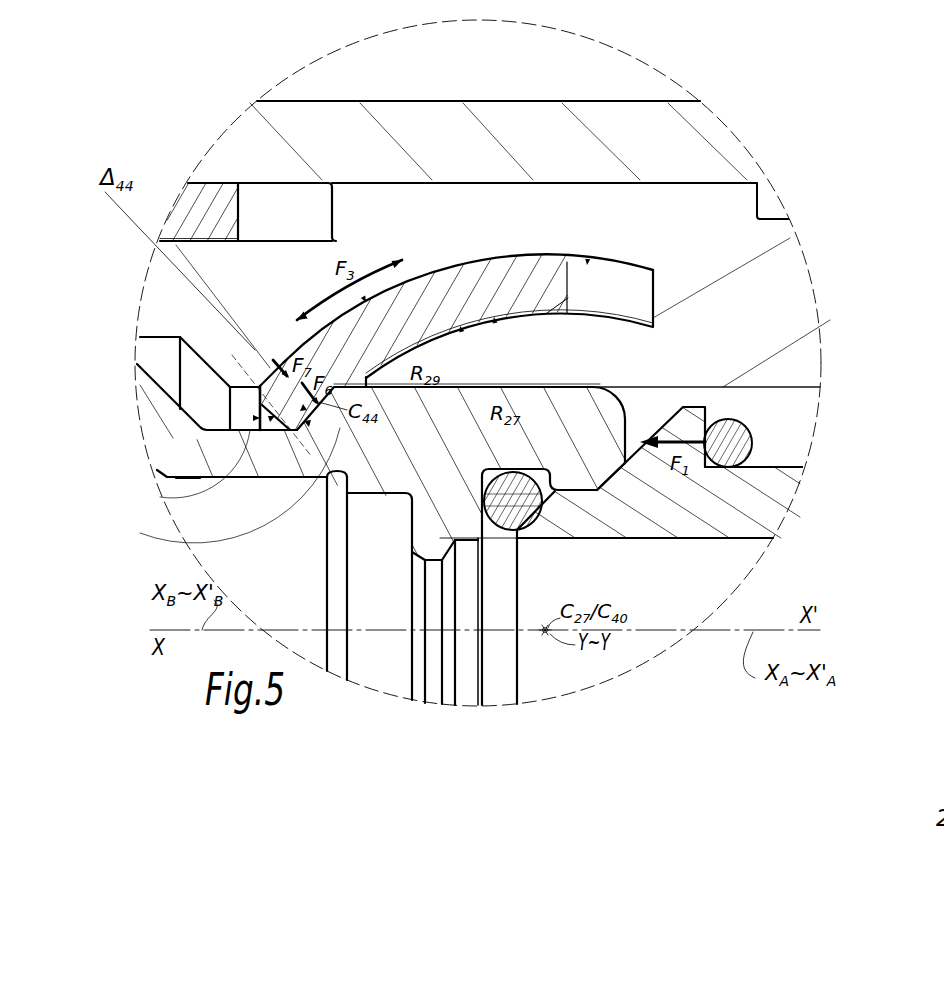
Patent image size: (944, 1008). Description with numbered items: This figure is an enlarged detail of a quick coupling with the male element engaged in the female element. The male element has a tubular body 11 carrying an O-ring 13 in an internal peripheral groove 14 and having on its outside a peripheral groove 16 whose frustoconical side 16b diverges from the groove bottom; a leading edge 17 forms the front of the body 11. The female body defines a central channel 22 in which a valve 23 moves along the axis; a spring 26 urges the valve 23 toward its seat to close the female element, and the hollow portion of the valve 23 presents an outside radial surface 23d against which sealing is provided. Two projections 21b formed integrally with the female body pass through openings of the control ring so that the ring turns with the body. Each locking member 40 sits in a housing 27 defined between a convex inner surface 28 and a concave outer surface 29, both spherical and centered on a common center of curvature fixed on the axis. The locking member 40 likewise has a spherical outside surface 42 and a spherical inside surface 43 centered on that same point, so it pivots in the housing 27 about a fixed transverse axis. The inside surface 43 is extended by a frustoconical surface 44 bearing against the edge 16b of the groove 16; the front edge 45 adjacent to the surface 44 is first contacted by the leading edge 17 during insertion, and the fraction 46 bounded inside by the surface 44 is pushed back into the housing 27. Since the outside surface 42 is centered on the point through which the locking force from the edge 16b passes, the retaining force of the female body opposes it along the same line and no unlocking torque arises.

The tubular body 11 is at (157, 428).
The O-ring 13 is at (538, 522).
The internal peripheral groove 14 is at (619, 398).
The peripheral groove 16 is at (212, 433).
The side of groove 16b is at (200, 522).
The leading edge 17 is at (620, 386).
The projections 21b is at (383, 207).
The central channel 22 is at (737, 428).
The valve 23 is at (650, 540).
The outside radial surface 23d is at (762, 458).
The spring 26 is at (812, 460).
The housing 27 is at (645, 291).
The convex inner surface 28 is at (463, 183).
The concave outer surface 29 is at (495, 312).
The locking member 40 is at (443, 292).
The outside surface 42 is at (421, 270).
The inside surface 43 is at (520, 386).
The frustoconical surface 44 is at (328, 478).
The front edge 45 is at (176, 478).
The fraction of locking member 46 is at (180, 336).